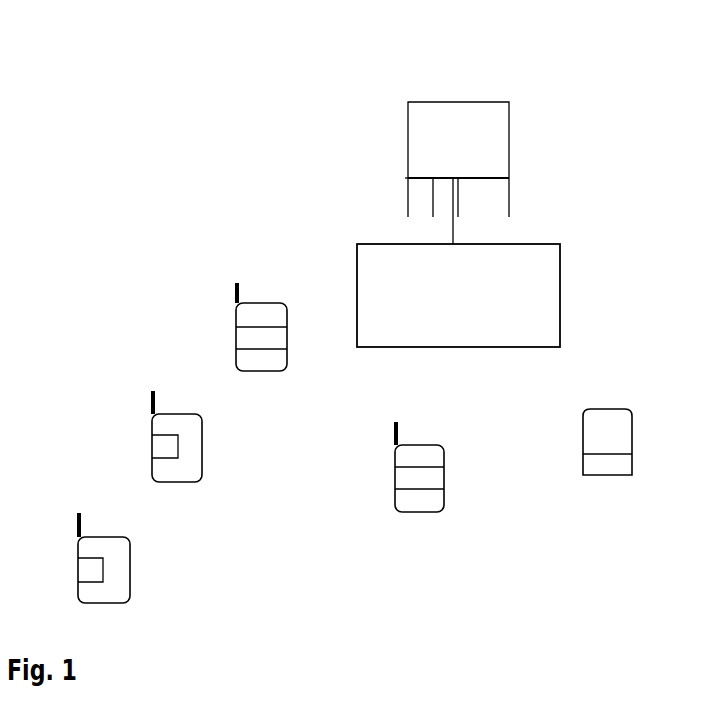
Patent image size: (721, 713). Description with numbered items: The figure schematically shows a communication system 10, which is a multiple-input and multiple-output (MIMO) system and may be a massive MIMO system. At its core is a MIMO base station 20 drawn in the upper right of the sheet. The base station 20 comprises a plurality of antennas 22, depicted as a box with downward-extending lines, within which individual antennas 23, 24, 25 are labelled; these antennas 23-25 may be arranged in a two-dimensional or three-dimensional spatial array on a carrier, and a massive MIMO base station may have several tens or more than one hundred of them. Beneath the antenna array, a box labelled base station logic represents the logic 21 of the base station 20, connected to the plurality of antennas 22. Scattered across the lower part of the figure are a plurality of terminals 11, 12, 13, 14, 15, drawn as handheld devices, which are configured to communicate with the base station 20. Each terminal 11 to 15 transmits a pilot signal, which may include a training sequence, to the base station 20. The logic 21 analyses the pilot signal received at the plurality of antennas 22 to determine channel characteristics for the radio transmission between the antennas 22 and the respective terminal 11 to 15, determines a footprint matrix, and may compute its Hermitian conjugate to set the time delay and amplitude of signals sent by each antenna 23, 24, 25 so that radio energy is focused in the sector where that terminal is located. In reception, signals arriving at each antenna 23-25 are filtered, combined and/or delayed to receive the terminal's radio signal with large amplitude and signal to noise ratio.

The communication system 10 is at (107, 42).
The terminal 11 is at (236, 371).
The terminal 12 is at (152, 482).
The terminal 13 is at (78, 603).
The terminal 14 is at (395, 512).
The terminal 15 is at (583, 475).
The MIMO base station 20 is at (318, 98).
The logic 21 is at (560, 347).
The plurality of antennas 22 is at (408, 178).
The antenna 23 is at (500, 165).
The antenna 24 is at (498, 150).
The antenna 25 is at (498, 128).